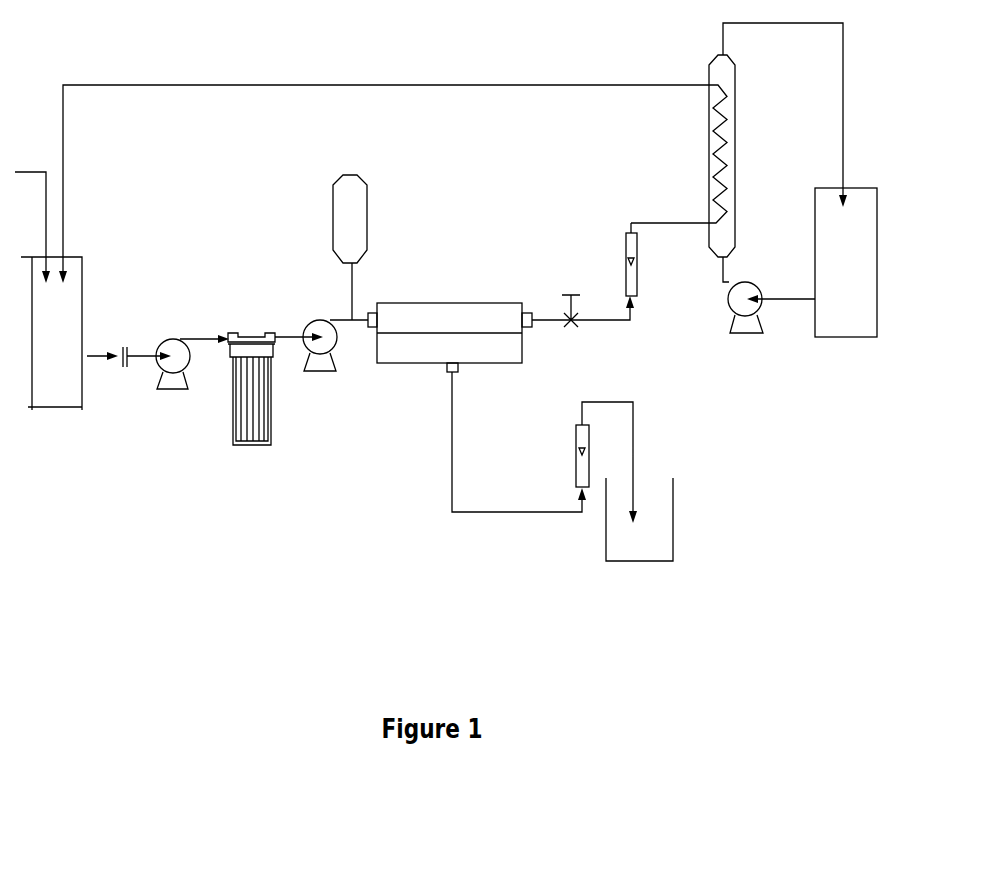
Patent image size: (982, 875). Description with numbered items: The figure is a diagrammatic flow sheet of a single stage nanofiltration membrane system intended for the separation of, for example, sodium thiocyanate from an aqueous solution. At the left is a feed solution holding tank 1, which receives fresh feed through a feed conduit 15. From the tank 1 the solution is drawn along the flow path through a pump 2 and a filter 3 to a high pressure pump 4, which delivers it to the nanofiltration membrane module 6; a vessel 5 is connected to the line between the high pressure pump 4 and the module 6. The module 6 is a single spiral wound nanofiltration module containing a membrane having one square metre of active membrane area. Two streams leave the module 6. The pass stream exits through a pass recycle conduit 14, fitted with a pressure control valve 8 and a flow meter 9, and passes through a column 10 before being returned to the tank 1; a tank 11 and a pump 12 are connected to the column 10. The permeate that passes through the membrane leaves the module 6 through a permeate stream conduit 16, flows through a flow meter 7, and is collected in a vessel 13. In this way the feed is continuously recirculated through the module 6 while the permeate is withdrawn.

The feed solution holding tank 1 is at (51, 333).
The feed pump 2 is at (173, 383).
The filter 3 is at (251, 378).
The high pressure pump 4 is at (320, 370).
The pressure accumulator 5 is at (350, 247).
The nanofiltration membrane module 6 is at (450, 337).
The permeate flow meter 7 is at (596, 462).
The pressure control valve 8 is at (571, 297).
The retentate flow meter 9 is at (643, 259).
The heat exchanger 10 is at (760, 152).
The coolant tank 11 is at (846, 262).
The coolant pump 12 is at (771, 334).
The permeate collection vessel 13 is at (639, 519).
The pass recycle conduit 14 is at (393, 170).
The feed conduit 15 is at (37, 213).
The permeate stream conduit 16 is at (519, 442).